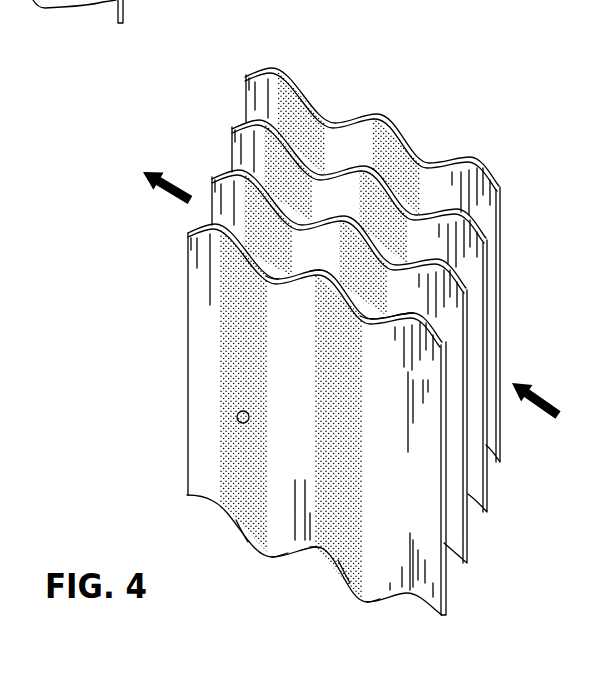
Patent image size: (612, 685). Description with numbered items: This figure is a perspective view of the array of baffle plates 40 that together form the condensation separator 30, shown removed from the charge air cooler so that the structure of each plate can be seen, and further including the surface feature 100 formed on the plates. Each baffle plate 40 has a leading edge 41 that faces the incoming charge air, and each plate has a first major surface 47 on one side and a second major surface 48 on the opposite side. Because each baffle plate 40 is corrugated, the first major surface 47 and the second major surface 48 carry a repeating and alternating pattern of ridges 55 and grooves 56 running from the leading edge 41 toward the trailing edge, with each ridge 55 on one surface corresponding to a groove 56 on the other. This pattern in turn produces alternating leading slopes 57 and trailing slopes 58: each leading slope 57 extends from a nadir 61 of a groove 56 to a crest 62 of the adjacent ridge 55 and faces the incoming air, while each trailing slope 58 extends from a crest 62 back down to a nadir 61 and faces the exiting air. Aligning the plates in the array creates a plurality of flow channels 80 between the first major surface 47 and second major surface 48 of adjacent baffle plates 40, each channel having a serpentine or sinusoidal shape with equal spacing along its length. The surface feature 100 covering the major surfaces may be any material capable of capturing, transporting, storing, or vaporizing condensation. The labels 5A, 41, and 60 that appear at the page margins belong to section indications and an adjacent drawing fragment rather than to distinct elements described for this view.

The condensation separator 30 is at (344, 83).
The baffle plate 40 is at (183, 262).
The leading edge 41 is at (123, 23).
The first major surface 47 is at (434, 441).
The second major surface 48 is at (443, 331).
The ridge 55 is at (270, 559).
The groove 56 is at (316, 552).
The leading slope 57 is at (196, 496).
The trailing slope 58 is at (242, 513).
The sheet 60 is at (58, 7).
The nadir 61 is at (320, 292).
The crest 62 is at (268, 282).
The flow channel 80 is at (363, 314).
The surface feature 100 is at (232, 357).
The section indicator 5A is at (236, 417).